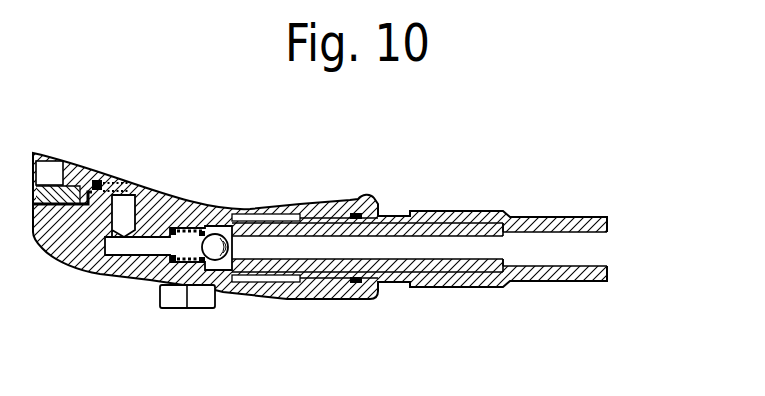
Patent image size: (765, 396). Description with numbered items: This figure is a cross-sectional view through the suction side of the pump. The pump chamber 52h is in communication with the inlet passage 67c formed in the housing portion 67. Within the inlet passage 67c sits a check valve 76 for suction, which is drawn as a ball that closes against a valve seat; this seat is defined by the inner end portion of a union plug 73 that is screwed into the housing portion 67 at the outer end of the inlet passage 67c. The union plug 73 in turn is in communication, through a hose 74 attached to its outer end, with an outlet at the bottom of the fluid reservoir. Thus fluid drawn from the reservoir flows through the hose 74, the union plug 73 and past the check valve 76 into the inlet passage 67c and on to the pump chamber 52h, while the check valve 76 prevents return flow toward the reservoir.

The pump chamber 52h is at (106, 178).
The housing portion 67 is at (85, 234).
The inlet passage 67c is at (138, 243).
The union plug 73 is at (396, 213).
The hose 74 is at (547, 215).
The check valve 76 is at (215, 243).